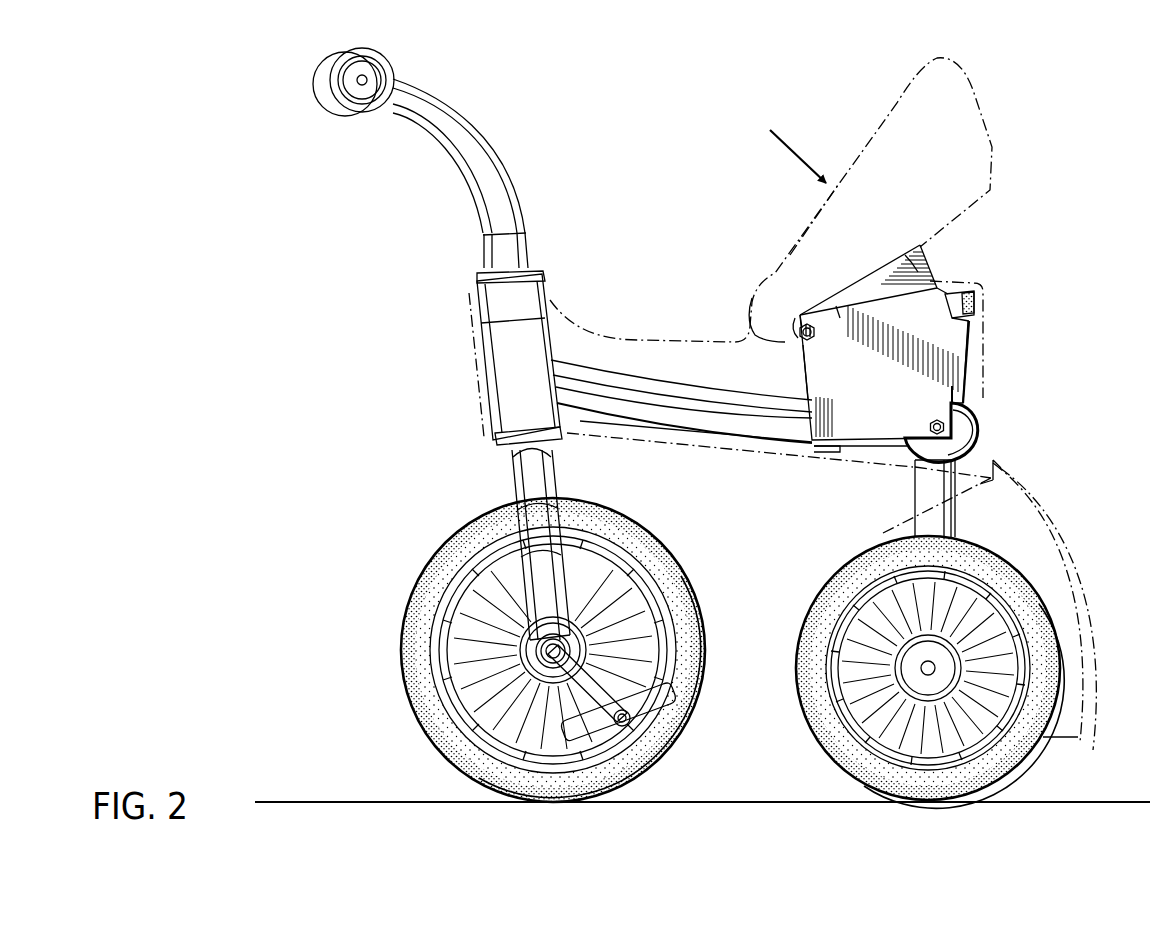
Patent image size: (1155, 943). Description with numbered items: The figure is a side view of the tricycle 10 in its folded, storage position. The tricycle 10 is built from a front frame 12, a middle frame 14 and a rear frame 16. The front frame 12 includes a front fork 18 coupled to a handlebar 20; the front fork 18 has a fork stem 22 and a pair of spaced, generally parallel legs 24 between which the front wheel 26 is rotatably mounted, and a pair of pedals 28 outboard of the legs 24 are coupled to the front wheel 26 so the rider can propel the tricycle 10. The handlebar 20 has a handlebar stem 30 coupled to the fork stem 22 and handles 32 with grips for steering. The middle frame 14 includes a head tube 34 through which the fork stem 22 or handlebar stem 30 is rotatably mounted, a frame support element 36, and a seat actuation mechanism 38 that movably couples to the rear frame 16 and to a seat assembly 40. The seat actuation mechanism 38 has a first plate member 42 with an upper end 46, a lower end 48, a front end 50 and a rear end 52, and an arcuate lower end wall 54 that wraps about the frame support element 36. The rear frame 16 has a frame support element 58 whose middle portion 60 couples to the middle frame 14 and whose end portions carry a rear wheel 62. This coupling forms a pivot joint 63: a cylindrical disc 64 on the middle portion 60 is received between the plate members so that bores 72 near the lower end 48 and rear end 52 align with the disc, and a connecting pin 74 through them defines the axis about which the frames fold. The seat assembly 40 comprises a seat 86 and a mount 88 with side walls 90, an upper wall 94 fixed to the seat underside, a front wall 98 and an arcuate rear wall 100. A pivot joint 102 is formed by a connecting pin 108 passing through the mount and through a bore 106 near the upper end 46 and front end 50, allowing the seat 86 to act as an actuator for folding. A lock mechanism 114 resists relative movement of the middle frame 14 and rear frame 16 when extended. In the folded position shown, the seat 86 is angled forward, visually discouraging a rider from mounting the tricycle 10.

The tricycle 10 is at (1057, 96).
The front frame 12 is at (495, 470).
The middle frame 14 is at (633, 374).
The rear frame 16 is at (913, 506).
The front fork 18 is at (512, 480).
The handlebar 20 is at (514, 171).
The fork stem 22 is at (551, 450).
The legs 24 is at (561, 577).
The front wheel 26 is at (400, 648).
The pedals 28 is at (574, 730).
The handlebar stem 30 is at (463, 173).
The handles 32 is at (314, 92).
The head tube 34 is at (497, 376).
The frame support element 36 is at (668, 430).
The seat actuation mechanism 38 is at (800, 383).
The seat assembly 40 is at (947, 61).
The first plate member 42 is at (882, 391).
The upper end 46 is at (836, 306).
The lower end 48 is at (827, 425).
The front end 50 is at (802, 360).
The rear end 52 is at (970, 342).
The lower end wall 54 is at (840, 453).
The frame support element 58 is at (942, 517).
The middle portion 60 is at (914, 478).
The rear wheel 62 is at (800, 668).
The pivot joint 63 is at (982, 407).
The cylindrical disc 64 is at (979, 429).
The bores 72 is at (929, 425).
The connecting pin 74 is at (937, 420).
The seat 86 is at (867, 147).
The mount 88 is at (909, 250).
The side walls 90 is at (920, 245).
The upper wall 94 is at (880, 265).
The front wall 98 is at (786, 330).
The rear wall 100 is at (932, 264).
The pivot joint 102 is at (786, 342).
The bore 106 is at (813, 340).
The connecting pin 108 is at (802, 320).
The lock mechanism 114 is at (992, 302).